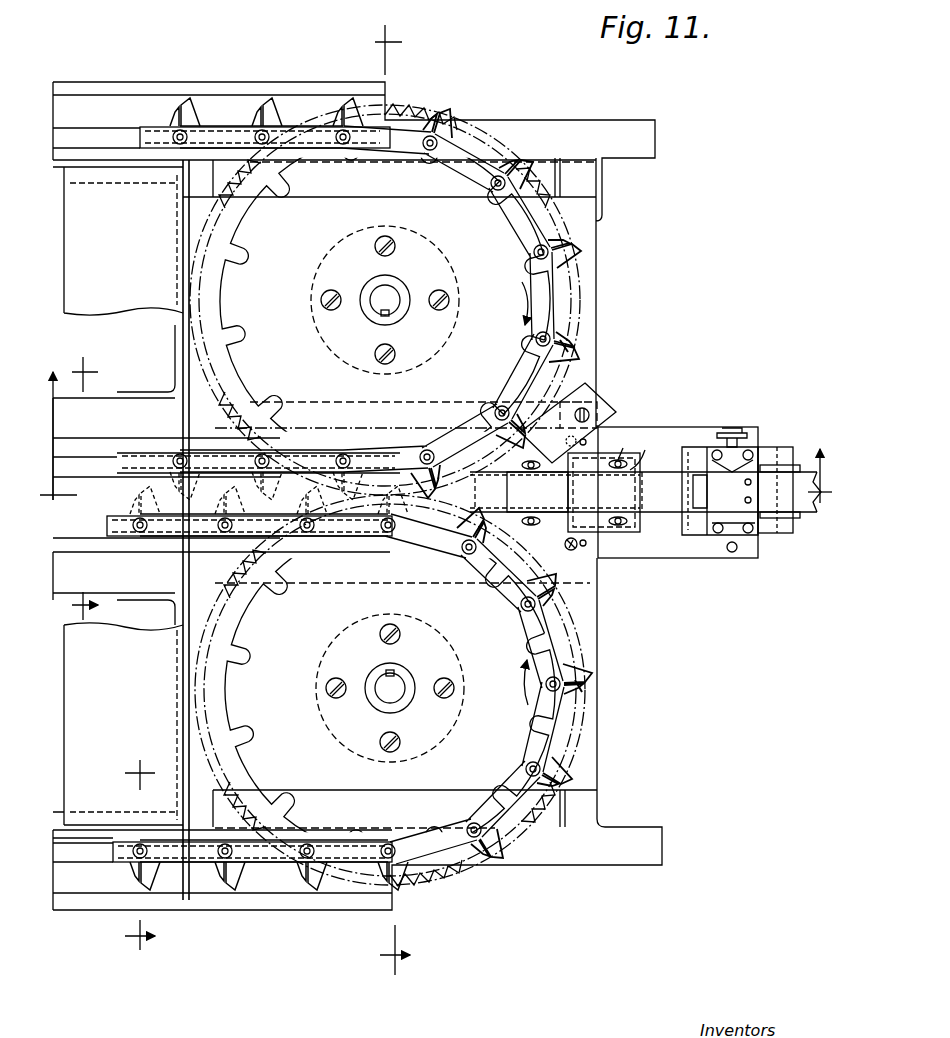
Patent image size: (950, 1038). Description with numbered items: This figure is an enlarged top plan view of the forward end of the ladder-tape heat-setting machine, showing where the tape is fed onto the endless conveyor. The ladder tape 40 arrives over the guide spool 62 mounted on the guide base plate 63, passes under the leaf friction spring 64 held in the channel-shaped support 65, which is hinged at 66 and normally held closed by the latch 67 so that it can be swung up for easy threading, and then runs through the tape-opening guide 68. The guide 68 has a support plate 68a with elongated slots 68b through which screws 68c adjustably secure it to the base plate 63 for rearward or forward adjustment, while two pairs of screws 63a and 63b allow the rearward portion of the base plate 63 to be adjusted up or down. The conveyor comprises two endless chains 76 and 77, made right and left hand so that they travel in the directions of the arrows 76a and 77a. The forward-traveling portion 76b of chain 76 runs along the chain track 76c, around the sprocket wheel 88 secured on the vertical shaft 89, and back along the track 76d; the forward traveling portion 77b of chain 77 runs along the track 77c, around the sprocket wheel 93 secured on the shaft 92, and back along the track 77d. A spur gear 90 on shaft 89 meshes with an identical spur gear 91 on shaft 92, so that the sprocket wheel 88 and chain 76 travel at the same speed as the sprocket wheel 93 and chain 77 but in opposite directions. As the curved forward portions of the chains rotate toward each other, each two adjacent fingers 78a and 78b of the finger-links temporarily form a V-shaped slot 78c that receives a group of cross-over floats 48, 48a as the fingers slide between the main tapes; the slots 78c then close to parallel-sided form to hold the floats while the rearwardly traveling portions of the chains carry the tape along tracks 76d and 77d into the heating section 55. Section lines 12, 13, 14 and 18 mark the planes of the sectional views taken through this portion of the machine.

The section line 12- 12 is at (408, 500).
The section line 13- 13 is at (125, 855).
The section line 14- 14 is at (100, 488).
The section line 18- 18 is at (434, 427).
The ladder tape 40 is at (645, 507).
The cross-over floats 48 is at (600, 487).
The cross-over floats 48a is at (650, 512).
The heating section 55 is at (118, 496).
The guide spool 62 is at (801, 520).
The guide base plate 63 is at (745, 556).
The screws 63a is at (586, 440).
The screws 63b is at (587, 442).
The leaf friction spring 64 is at (712, 505).
The channel-shaped support 65 is at (712, 480).
The hinge 66 is at (733, 525).
The latch 67 is at (745, 452).
The tape-opening guide 68 is at (562, 485).
The support plate 68a is at (655, 449).
The elongated slots 68b is at (635, 444).
The screws 68c is at (540, 463).
The endless chain 76 is at (547, 653).
The arrow 76a is at (506, 682).
The forward-traveling portion 76b is at (198, 855).
The chain track 76c is at (97, 855).
The track 76d is at (73, 530).
The endless chain 77 is at (545, 300).
The arrow 77a is at (507, 303).
The forward traveling portion 77b is at (203, 137).
The track 77c is at (112, 138).
The track 77d is at (92, 460).
The finger 78a is at (573, 364).
The finger 78b is at (556, 336).
The slot 78c is at (564, 348).
The sprocket wheel 88 is at (228, 668).
The vertical shaft 89 is at (396, 681).
The spur gear 90 is at (590, 716).
The spur gear 91 is at (582, 320).
The shaft 92 is at (392, 297).
The sprocket wheel 93 is at (215, 280).